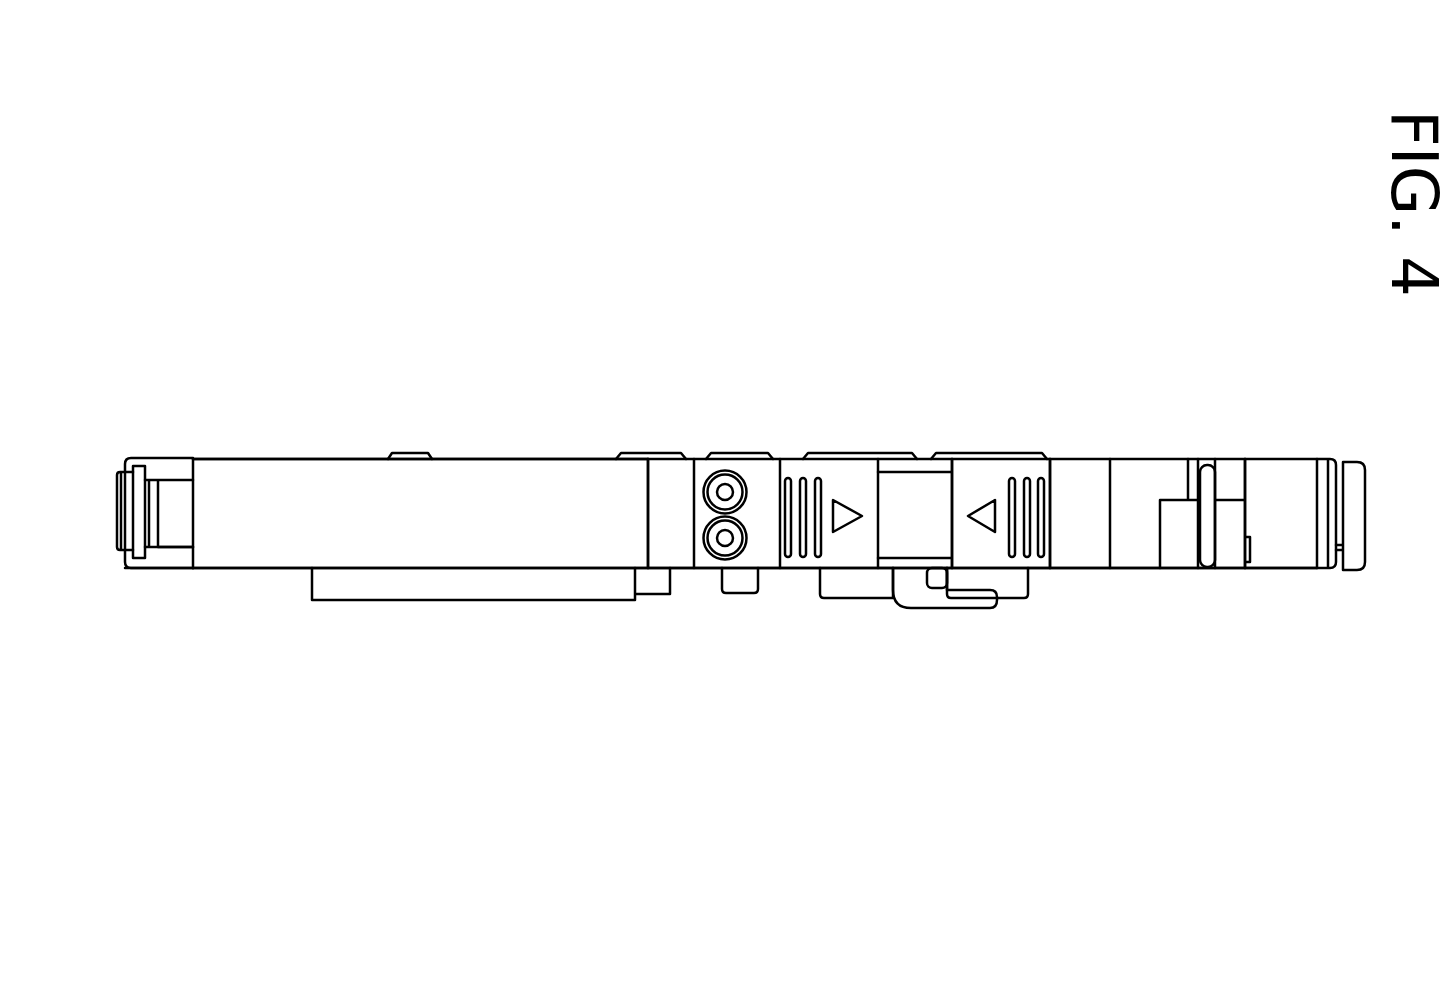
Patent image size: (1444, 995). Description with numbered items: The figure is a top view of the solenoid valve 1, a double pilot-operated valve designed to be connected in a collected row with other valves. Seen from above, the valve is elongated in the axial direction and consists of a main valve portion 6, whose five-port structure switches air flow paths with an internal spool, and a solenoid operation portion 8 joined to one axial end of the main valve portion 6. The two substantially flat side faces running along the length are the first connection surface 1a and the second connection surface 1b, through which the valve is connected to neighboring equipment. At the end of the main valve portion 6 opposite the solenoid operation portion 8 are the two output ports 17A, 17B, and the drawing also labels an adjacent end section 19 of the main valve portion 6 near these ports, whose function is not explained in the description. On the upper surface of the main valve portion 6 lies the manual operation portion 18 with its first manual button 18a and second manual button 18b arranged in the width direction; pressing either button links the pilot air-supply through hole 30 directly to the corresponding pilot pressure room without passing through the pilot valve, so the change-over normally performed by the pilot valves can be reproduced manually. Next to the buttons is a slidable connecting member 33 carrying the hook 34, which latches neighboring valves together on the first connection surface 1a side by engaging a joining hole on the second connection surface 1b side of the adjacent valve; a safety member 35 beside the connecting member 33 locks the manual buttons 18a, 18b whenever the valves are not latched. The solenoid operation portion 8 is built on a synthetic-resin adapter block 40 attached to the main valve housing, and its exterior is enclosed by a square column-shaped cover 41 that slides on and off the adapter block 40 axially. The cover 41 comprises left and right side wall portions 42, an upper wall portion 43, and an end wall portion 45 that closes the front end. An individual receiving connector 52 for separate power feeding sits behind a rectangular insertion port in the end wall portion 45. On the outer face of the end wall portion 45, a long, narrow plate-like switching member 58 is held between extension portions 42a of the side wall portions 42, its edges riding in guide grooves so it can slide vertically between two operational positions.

The solenoid valve 1 is at (755, 428).
The first connection surface 1a is at (1085, 568).
The second connection surface 1b is at (1080, 460).
The main valve portion 6 is at (1013, 400).
The solenoid operation portion 8 is at (283, 395).
The output port 17A is at (1331, 460).
The output port 17B is at (1358, 488).
The manual operation portion 18 is at (732, 437).
The first manual button 18a is at (722, 545).
The second manual button 18b is at (722, 490).
The end cap section 19 is at (1285, 475).
The pilot air-supply through hole 30 is at (740, 590).
The connecting member 33 is at (972, 470).
The hook 34 is at (957, 603).
The safety member 35 is at (846, 472).
The adapter block 40 is at (663, 468).
The cover 41 is at (247, 446).
The side wall portion 42 is at (358, 457).
The extension portion 42a is at (158, 457).
The upper wall portion 43 is at (275, 550).
The end wall portion 45 is at (190, 503).
The individual receiving connector 52 is at (173, 546).
The switching member 58 is at (130, 523).